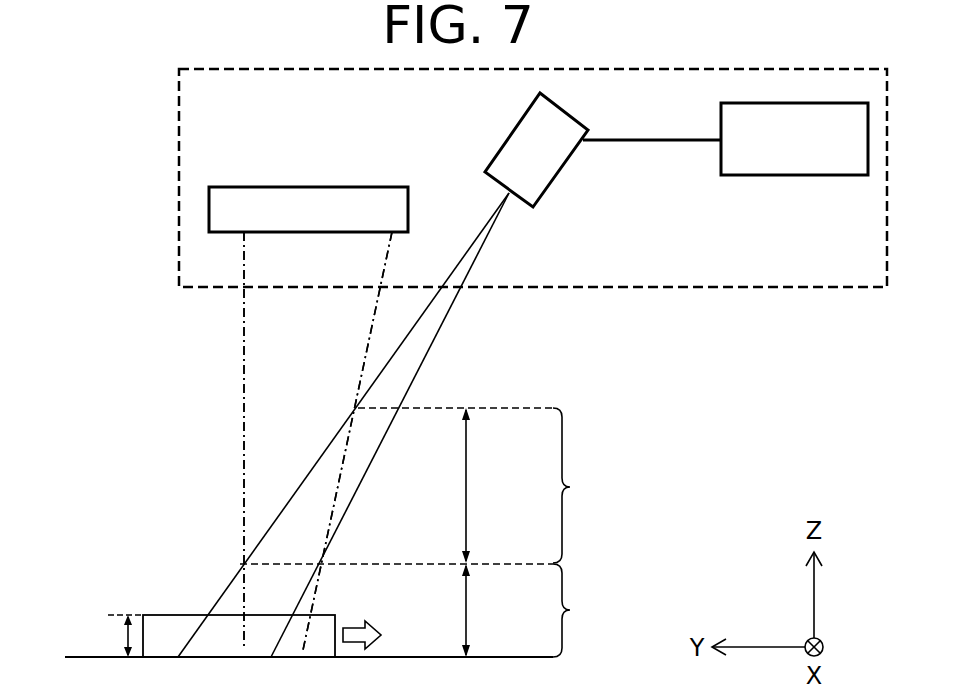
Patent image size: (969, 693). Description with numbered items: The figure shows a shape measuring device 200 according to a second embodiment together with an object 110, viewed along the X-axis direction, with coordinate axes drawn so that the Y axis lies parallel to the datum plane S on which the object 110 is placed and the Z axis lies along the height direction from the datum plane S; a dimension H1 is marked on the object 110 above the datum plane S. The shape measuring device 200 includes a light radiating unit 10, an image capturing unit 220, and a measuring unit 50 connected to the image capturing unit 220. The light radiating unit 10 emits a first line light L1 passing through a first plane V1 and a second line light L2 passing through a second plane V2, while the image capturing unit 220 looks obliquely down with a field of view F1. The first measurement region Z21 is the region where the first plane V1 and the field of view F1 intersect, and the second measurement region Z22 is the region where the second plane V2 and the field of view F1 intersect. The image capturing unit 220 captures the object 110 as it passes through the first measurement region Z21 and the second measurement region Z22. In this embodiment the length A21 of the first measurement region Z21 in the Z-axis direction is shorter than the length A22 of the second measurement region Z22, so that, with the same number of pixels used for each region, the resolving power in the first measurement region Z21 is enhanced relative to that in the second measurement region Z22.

The light radiating unit 10 is at (365, 186).
The measuring unit 50 is at (793, 176).
The object 110 is at (200, 614).
The shape measuring device 200 is at (757, 287).
The image capturing unit 220 is at (508, 138).
The datum plane S is at (70, 656).
The height of object H1 is at (114, 636).
The first line light L1 is at (244, 385).
The second line light L2 is at (365, 356).
The first plane V1 is at (244, 413).
The second plane V2 is at (358, 396).
The field of view F1 is at (420, 345).
The length of first measurement region A21 is at (494, 610).
The length of second measurement region A22 is at (494, 485).
The first measurement region Z21 is at (570, 610).
The second measurement region Z22 is at (570, 487).